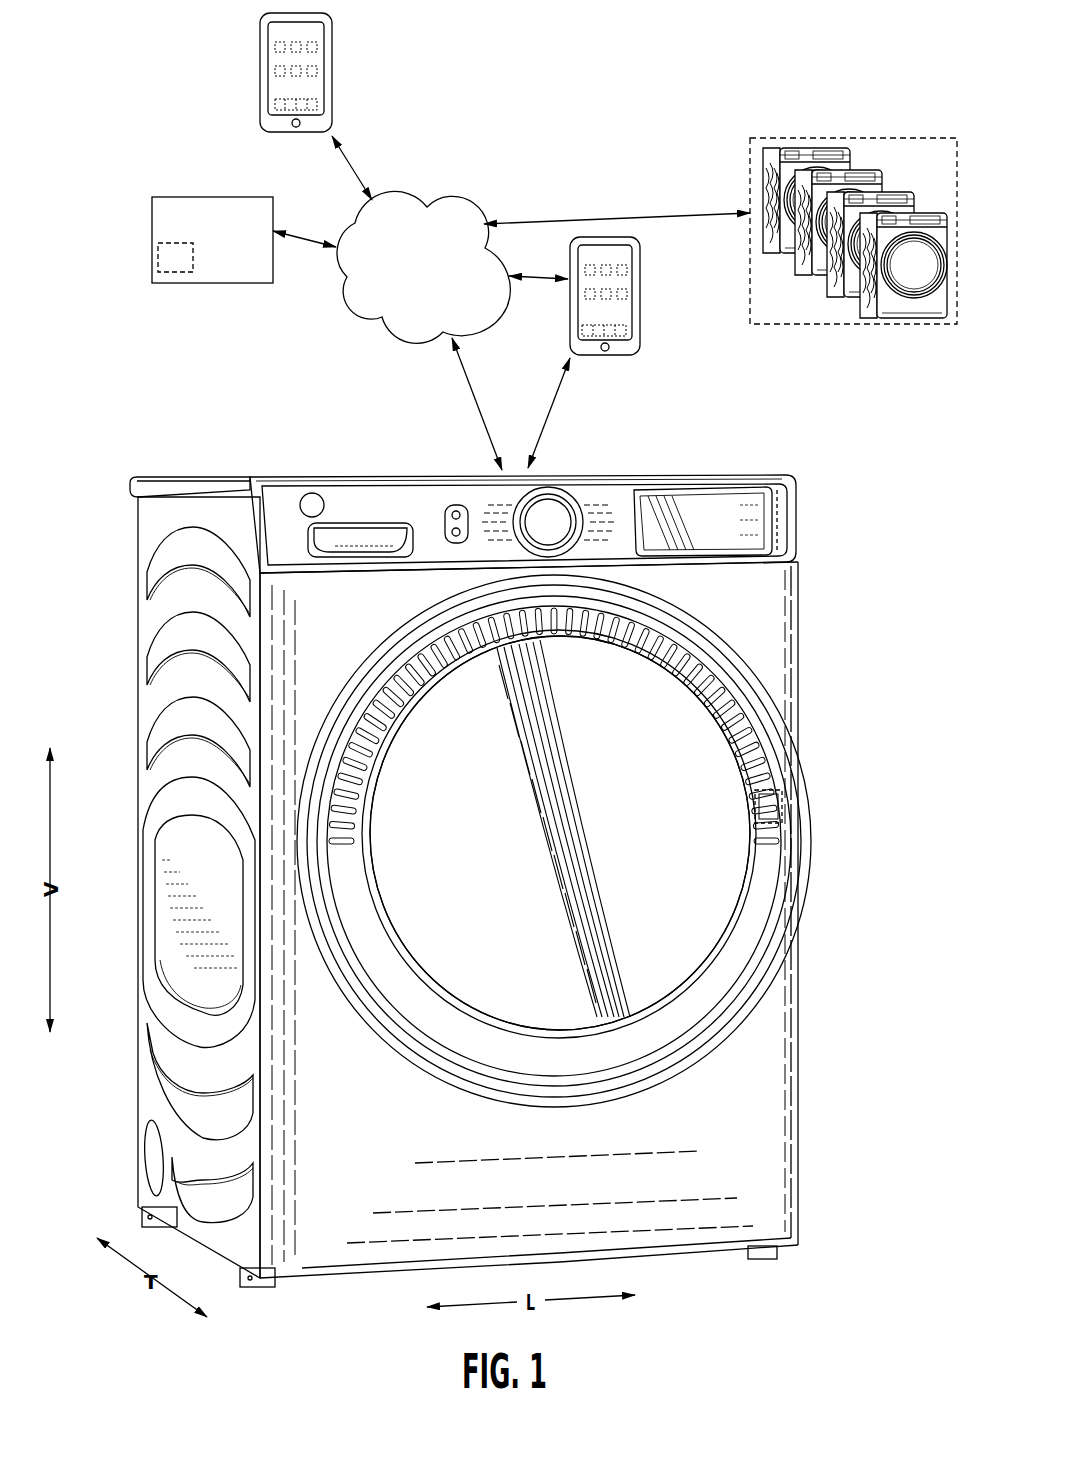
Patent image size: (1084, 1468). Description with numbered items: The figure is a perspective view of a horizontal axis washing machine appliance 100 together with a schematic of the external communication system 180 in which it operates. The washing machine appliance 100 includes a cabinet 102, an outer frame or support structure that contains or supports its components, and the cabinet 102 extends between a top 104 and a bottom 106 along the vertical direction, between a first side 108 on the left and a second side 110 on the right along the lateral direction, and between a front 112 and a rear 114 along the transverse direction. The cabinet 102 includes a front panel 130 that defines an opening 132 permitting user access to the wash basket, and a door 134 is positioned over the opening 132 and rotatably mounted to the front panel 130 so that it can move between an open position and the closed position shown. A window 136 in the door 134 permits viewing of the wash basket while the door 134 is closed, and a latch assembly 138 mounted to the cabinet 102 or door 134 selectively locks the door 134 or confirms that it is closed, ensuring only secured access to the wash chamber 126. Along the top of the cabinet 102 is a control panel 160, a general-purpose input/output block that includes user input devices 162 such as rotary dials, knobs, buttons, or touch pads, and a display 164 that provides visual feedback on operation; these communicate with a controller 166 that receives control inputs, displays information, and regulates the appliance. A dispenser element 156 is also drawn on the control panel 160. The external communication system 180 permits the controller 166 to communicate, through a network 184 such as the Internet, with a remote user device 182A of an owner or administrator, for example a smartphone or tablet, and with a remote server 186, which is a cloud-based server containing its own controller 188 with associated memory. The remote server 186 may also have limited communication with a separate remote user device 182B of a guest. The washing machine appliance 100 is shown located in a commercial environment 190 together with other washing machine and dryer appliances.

The washing machine appliance 100 is at (773, 410).
The cabinet 102 is at (150, 705).
The top 104 is at (130, 478).
The bottom 106 is at (807, 1230).
The first side 108 is at (166, 1052).
The second side 110 is at (807, 1078).
The front 112 is at (742, 1135).
The rear 114 is at (137, 640).
The wash chamber 126 is at (680, 860).
The front panel 130 is at (777, 668).
The opening 132 is at (733, 670).
The door 134 is at (750, 920).
The window 136 is at (712, 968).
The latch assembly 138 is at (785, 807).
The dispenser drawer 156 is at (375, 500).
The control panel 160 is at (648, 472).
The user input devices 162 is at (452, 505).
The display 164 is at (705, 490).
The controller 166 is at (783, 500).
The external communication system 180 is at (566, 196).
The remote user device 182A is at (641, 300).
The remote user device 182B is at (258, 75).
The network 184 is at (429, 285).
The remote server 186 is at (244, 243).
The controller 188 is at (168, 285).
The commercial environment 190 is at (750, 180).